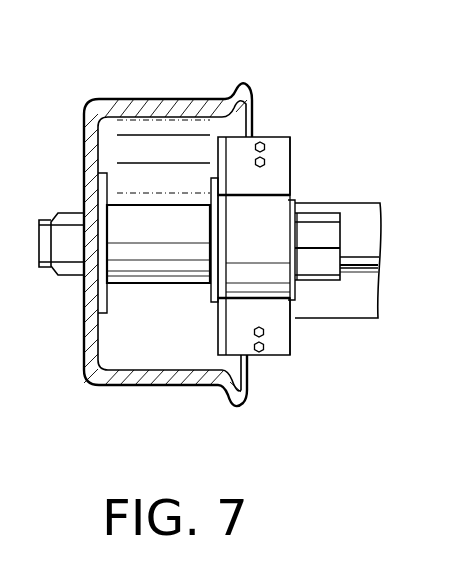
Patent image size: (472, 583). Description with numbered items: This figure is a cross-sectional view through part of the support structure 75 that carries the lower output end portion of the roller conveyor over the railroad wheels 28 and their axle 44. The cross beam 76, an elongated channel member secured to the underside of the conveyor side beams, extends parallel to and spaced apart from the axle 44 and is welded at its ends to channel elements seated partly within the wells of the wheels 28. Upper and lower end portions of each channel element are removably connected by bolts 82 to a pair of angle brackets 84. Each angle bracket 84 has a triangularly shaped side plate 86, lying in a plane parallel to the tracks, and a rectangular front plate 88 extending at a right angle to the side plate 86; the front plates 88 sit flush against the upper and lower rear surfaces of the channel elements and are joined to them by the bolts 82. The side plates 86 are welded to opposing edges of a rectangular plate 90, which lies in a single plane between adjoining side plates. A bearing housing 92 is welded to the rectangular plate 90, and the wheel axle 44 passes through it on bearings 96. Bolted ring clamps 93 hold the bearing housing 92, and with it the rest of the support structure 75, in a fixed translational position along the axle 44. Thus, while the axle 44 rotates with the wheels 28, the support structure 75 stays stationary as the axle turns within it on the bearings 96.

The railroad wheels 28 is at (157, 387).
The axle 44 is at (370, 257).
The support structure 75 is at (303, 186).
The cross beam 76 is at (358, 308).
The bolts 82 is at (263, 207).
The angle brackets 84 is at (231, 148).
The side plate 86 is at (231, 170).
The front plate 88 is at (290, 162).
The rectangular plate 90 is at (212, 297).
The bearing housing 92 is at (302, 236).
The bolted ring clamps 93 is at (333, 283).
The bearings 96 is at (212, 197).